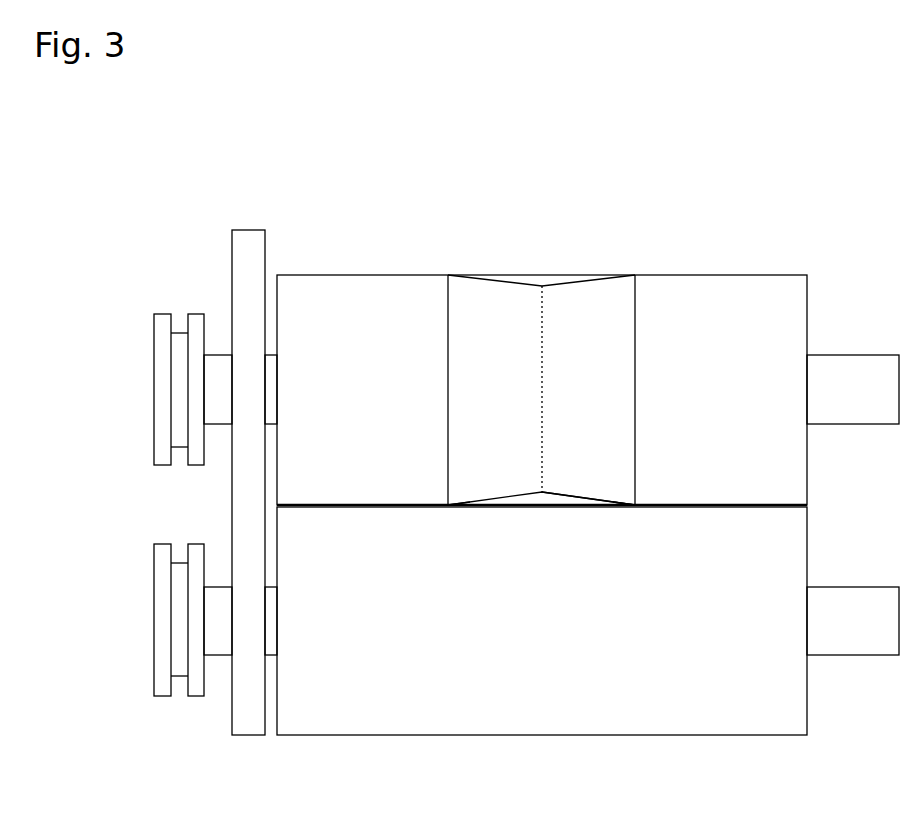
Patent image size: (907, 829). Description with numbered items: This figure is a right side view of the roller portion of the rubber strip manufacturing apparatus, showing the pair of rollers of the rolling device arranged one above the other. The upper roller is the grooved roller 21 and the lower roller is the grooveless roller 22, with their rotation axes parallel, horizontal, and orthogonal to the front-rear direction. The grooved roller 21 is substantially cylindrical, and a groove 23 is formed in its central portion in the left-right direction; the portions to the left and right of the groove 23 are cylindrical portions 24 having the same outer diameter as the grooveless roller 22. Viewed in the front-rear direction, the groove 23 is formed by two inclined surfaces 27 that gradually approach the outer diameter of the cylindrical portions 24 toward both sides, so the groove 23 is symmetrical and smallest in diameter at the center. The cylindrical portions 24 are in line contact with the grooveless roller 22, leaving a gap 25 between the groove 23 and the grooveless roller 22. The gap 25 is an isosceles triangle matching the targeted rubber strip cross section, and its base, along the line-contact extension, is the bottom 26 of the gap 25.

The grooved roller 21 is at (820, 296).
The grooveless roller 22 is at (820, 547).
The groove 23 is at (537, 272).
The cylindrical portions 24 is at (365, 287).
The gap 25 is at (543, 497).
The bottom 26 is at (570, 502).
The inclined surfaces 27 is at (480, 502).